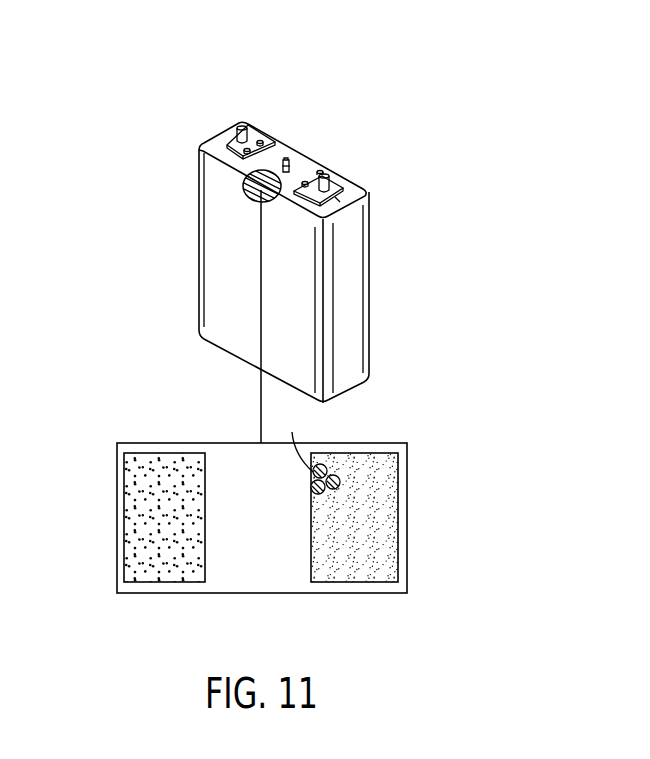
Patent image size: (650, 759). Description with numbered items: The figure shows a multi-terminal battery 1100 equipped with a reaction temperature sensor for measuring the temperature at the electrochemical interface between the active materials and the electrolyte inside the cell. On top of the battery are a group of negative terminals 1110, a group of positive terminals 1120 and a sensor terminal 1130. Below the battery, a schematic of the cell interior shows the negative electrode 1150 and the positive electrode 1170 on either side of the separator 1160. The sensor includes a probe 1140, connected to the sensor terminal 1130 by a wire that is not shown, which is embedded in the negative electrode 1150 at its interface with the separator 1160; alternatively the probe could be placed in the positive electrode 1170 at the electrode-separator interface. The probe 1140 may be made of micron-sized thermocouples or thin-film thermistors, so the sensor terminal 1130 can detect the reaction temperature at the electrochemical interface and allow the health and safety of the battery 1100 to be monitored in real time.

The multi-terminal battery 1100 is at (387, 98).
The group of negative terminals 1110 is at (337, 182).
The group of positive terminals 1120 is at (228, 137).
The sensor terminal 1130 is at (288, 157).
The probe 1140 is at (337, 487).
The negative electrode 1150 is at (367, 518).
The separator 1160 is at (267, 533).
The positive electrode 1170 is at (138, 497).